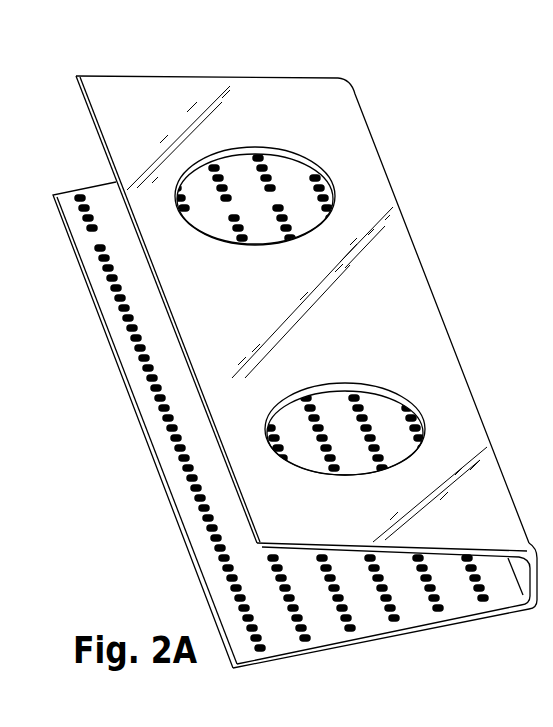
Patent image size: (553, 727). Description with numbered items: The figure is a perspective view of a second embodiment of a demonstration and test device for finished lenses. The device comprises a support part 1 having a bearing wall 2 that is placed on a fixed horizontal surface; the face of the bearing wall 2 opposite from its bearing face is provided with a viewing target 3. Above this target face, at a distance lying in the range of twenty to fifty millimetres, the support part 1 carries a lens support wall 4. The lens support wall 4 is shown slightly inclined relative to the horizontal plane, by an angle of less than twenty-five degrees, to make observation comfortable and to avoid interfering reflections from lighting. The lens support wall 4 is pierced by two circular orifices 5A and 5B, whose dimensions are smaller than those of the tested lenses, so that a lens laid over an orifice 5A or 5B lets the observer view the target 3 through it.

The support part 1 is at (466, 278).
The bearing wall 2 is at (362, 650).
The viewing target 3 is at (238, 543).
The lens support wall 4 is at (236, 108).
The first orifice 5A is at (284, 182).
The second orifice 5B is at (386, 442).